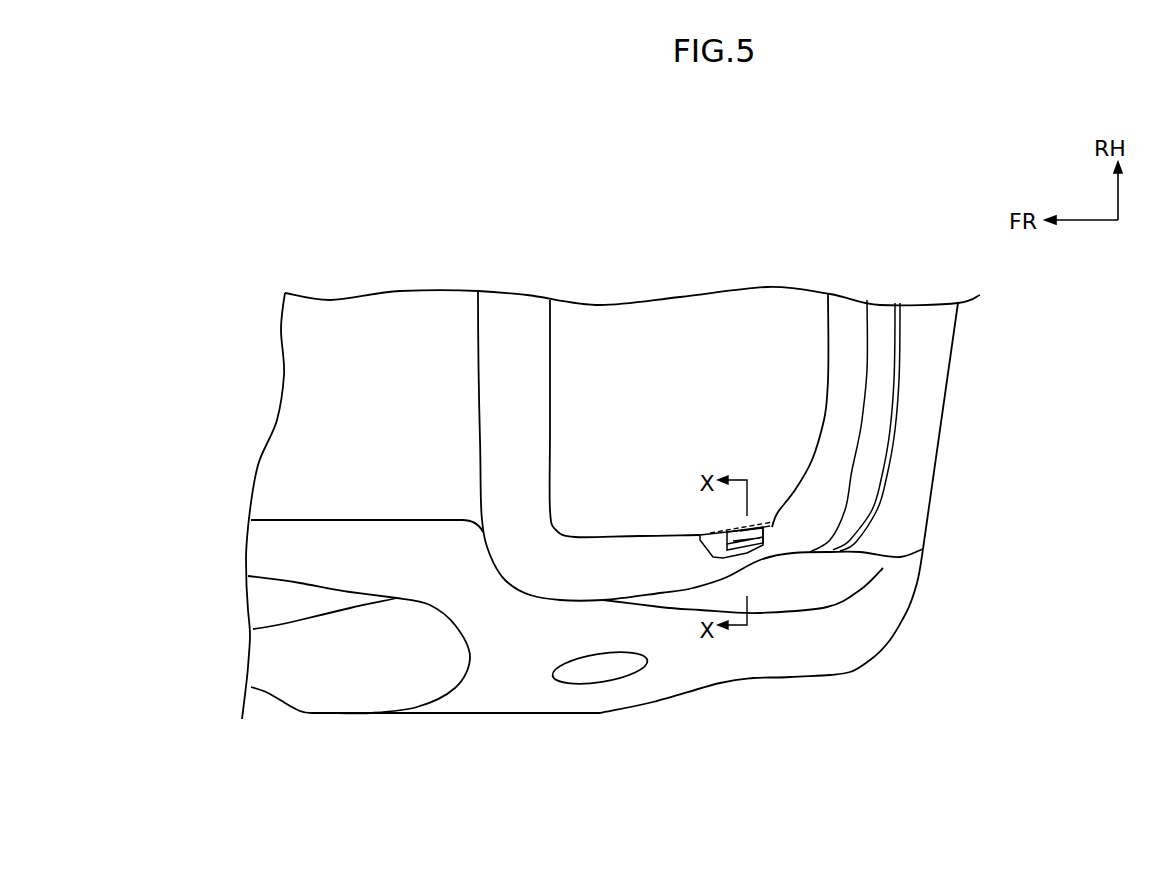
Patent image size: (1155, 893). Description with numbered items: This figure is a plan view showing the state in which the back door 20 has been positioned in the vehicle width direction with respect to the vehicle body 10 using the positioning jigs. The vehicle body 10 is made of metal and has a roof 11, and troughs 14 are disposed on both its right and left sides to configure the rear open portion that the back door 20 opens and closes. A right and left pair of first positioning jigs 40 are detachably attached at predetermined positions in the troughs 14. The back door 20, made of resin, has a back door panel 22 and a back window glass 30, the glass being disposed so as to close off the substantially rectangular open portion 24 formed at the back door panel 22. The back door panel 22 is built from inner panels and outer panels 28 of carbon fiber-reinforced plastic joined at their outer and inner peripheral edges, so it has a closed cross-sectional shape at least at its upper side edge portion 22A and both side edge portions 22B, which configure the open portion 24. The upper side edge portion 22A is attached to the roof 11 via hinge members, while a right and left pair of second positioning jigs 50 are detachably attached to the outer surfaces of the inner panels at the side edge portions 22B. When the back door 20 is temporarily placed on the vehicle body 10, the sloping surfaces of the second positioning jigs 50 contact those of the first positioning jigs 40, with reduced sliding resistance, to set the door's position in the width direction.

The vehicle body 10 is at (473, 720).
The roof 11 is at (313, 441).
The troughs 14 is at (700, 533).
The back door 20 is at (956, 390).
The back door panel 22 is at (938, 351).
The upper side edge portion 22A is at (495, 377).
The side edge portions 22B is at (690, 575).
The open portion 24 is at (552, 333).
The outer panels 28 is at (843, 312).
The back window glass 30 is at (682, 328).
The first positioning jigs 40 is at (752, 560).
The second positioning jigs 50 is at (755, 520).